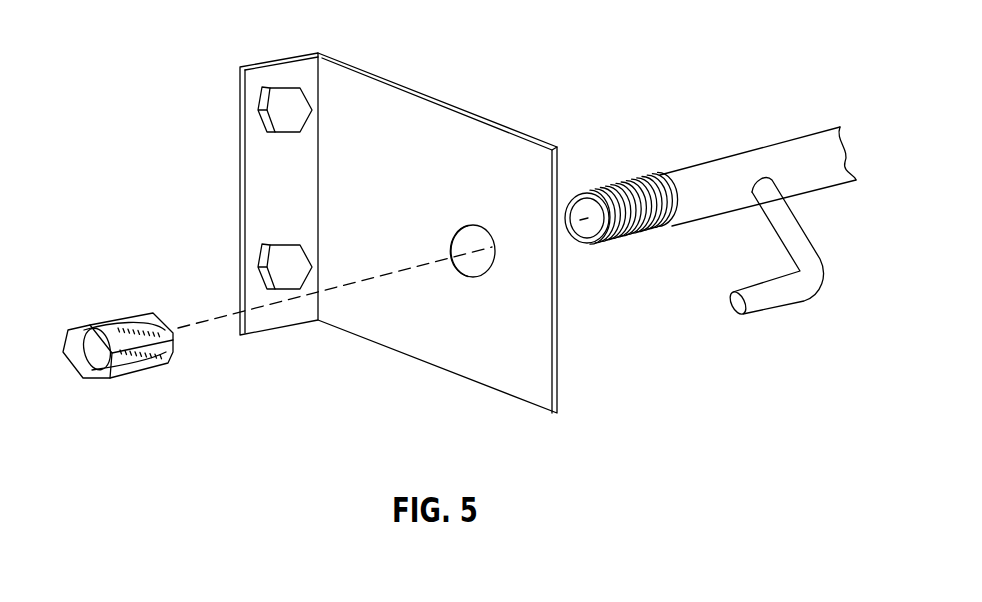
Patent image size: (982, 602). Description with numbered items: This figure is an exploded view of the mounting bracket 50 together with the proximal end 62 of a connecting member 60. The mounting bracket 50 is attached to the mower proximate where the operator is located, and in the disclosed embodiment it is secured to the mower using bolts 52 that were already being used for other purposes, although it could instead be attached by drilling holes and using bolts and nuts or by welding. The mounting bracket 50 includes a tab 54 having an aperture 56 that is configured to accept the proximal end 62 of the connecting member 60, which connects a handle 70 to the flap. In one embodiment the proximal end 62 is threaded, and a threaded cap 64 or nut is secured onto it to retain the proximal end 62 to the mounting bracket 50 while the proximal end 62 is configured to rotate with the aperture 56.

The mounting bracket 50 is at (223, 191).
The bolts 52 is at (282, 88).
The tab 54 is at (462, 145).
The aperture 56 is at (470, 278).
The connecting member 60 is at (808, 130).
The proximal end 62 is at (622, 237).
The threaded cap 64 is at (100, 320).
The handle 70 is at (800, 295).